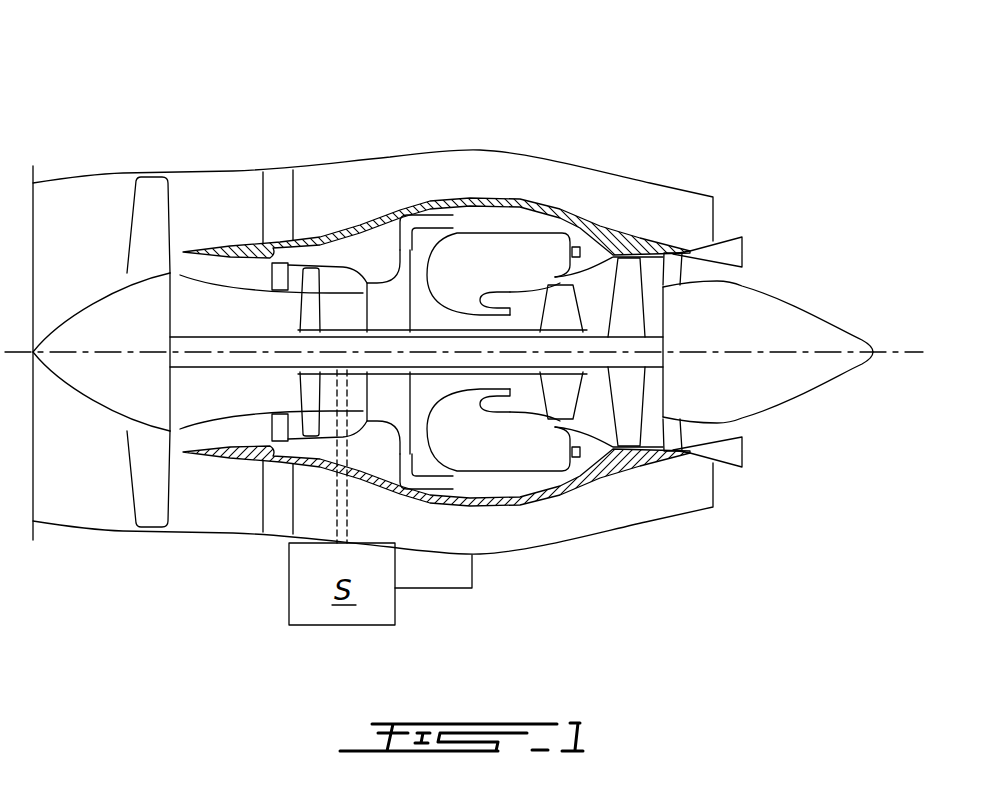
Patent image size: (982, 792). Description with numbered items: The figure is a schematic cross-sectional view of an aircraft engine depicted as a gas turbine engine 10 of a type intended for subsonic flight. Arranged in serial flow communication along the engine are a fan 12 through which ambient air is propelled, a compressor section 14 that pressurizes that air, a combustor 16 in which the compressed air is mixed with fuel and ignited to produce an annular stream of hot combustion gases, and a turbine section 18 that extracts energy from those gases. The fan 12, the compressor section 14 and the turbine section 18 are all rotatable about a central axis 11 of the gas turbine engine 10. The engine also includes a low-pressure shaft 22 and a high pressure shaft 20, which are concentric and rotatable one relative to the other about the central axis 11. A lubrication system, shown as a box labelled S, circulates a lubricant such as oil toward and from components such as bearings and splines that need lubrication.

The gas turbine engine 10 is at (612, 116).
The central axis 11 is at (903, 350).
The fan 12 is at (145, 468).
The compressor section 14 is at (335, 278).
The combustor 16 is at (497, 247).
The turbine section 18 is at (595, 402).
The high pressure shaft 20 is at (345, 332).
The low-pressure shaft 22 is at (230, 368).